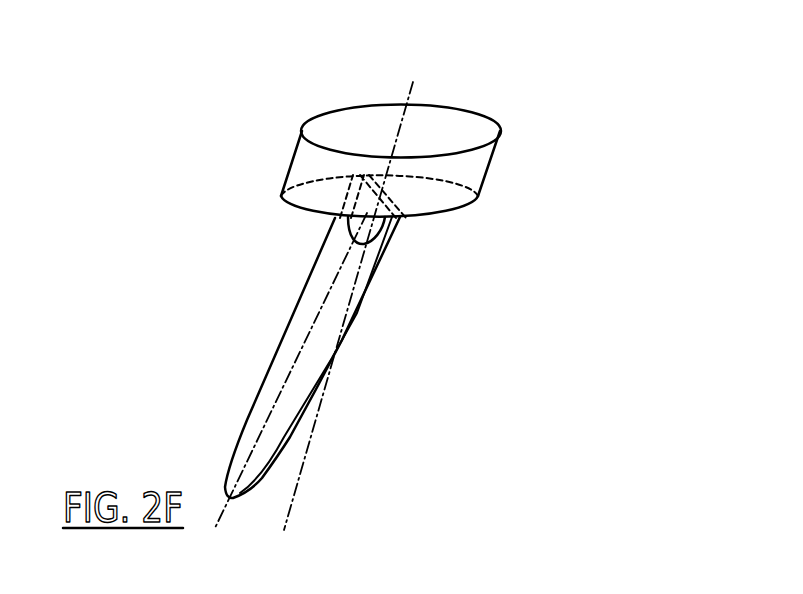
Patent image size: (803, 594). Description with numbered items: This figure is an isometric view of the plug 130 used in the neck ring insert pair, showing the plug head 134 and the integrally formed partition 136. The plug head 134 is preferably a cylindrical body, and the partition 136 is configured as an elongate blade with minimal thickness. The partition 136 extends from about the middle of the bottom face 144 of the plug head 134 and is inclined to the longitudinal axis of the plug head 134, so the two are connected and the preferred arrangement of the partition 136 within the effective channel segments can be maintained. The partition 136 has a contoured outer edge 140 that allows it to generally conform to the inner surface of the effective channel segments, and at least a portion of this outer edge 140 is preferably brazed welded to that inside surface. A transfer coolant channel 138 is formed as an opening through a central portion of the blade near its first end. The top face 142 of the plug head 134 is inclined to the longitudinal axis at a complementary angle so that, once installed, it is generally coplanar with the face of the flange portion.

The plug 130 is at (495, 70).
The plug head 134 is at (492, 167).
The top face of the plug head 142 is at (468, 127).
The bottom face of the plug head 144 is at (457, 215).
The transfer coolant channel 138 is at (390, 231).
The partition 136 is at (357, 314).
The contoured outer edge 140 is at (286, 463).